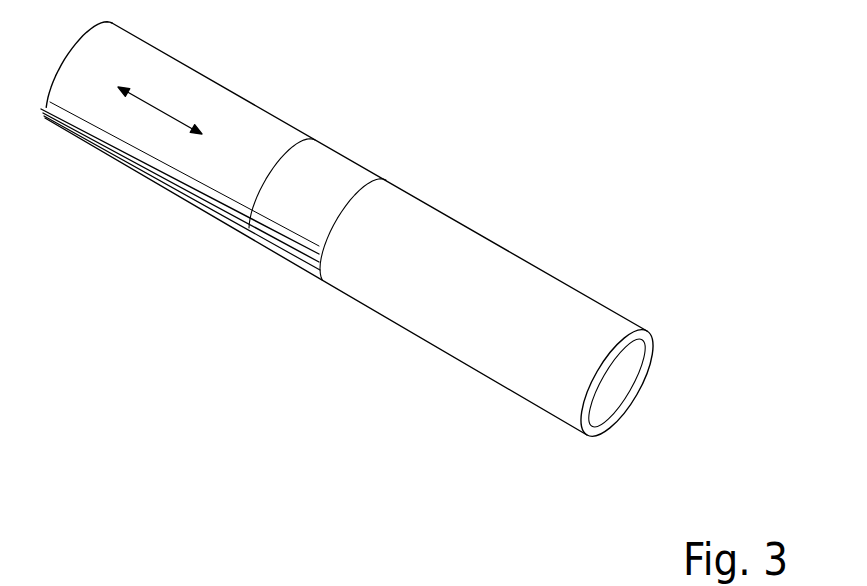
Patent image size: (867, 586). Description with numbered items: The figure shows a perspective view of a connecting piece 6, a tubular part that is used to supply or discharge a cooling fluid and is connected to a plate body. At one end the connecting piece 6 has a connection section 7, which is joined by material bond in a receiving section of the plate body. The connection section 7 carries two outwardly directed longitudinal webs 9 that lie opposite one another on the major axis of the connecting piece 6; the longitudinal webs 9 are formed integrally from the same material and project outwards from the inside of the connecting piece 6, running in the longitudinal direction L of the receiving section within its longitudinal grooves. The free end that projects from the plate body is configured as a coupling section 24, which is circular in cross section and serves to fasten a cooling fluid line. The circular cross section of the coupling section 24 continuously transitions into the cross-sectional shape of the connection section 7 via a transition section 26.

The connecting piece 6 is at (476, 225).
The connection section 7 is at (247, 115).
The longitudinal webs 9 is at (143, 163).
The coupling section 24 is at (460, 345).
The transition section 26 is at (352, 170).
The longitudinal direction L is at (160, 106).